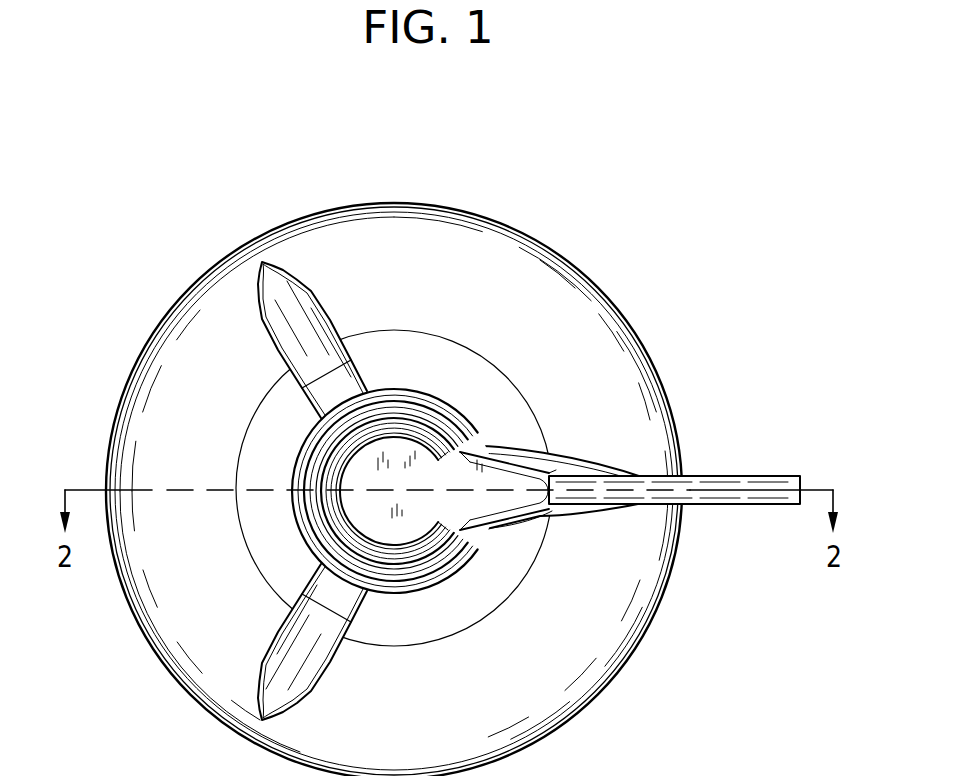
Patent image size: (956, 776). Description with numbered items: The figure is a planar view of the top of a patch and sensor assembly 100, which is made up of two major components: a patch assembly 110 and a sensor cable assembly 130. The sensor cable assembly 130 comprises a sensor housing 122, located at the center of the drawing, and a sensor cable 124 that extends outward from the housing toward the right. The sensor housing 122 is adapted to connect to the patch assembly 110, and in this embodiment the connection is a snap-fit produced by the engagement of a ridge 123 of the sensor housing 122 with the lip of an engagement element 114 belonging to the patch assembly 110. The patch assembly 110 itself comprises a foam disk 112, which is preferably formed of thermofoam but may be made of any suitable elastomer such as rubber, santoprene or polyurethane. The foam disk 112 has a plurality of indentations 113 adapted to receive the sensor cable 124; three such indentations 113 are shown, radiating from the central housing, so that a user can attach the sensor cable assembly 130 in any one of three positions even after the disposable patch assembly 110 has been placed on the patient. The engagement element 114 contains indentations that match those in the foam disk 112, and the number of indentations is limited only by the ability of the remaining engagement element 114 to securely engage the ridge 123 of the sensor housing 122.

The patch and sensor assembly 100 is at (604, 178).
The patch assembly 110 is at (172, 314).
The foam disk 112 is at (392, 247).
The indentations 113 is at (268, 268).
The engagement element 114 is at (343, 572).
The sensor housing 122 is at (490, 458).
The ridge 123 is at (427, 421).
The sensor cable 124 is at (736, 507).
The sensor cable assembly 130 is at (562, 461).